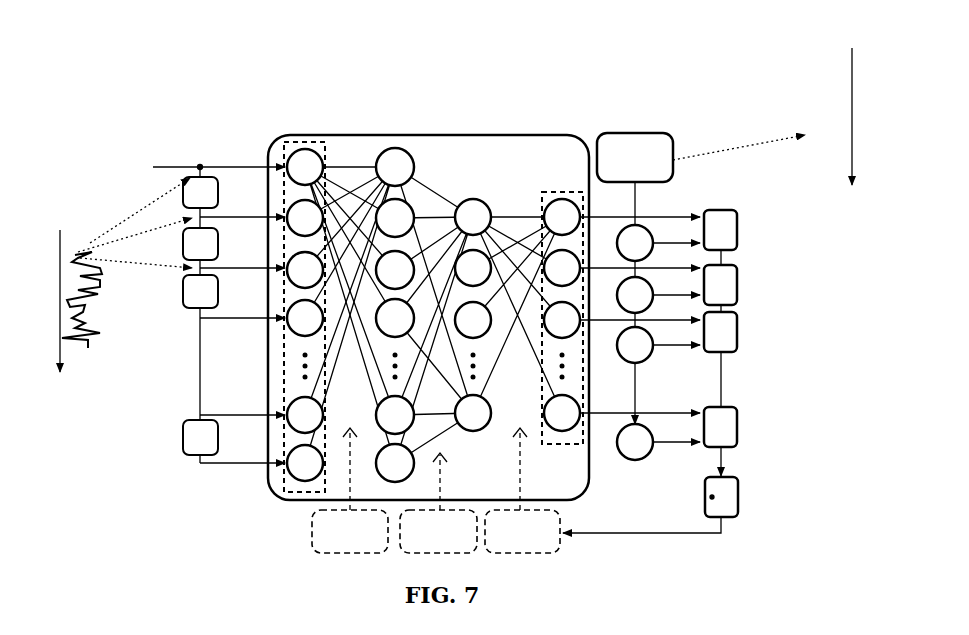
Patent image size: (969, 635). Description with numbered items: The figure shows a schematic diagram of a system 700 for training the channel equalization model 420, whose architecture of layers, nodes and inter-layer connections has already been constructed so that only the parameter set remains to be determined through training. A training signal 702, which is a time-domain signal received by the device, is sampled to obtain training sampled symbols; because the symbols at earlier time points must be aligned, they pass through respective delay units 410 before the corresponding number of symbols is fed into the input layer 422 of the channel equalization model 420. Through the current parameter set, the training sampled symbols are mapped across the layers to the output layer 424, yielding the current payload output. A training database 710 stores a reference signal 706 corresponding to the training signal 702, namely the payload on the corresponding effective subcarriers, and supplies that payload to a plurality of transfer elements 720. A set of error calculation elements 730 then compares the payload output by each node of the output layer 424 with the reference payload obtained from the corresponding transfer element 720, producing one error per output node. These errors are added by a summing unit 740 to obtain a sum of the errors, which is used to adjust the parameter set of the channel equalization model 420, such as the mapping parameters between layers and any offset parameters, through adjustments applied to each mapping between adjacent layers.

The system 700 is at (218, 98).
The training signal 702 is at (80, 230).
The delay units 410 is at (220, 178).
The channel equalization model 420 is at (470, 136).
The input layer 422 is at (310, 143).
The output layer 424 is at (555, 192).
The reference signal 706 is at (792, 52).
The training database 710 is at (640, 134).
The transfer elements 720 is at (641, 226).
The error calculation elements 730 is at (738, 226).
The summing unit 740 is at (740, 492).